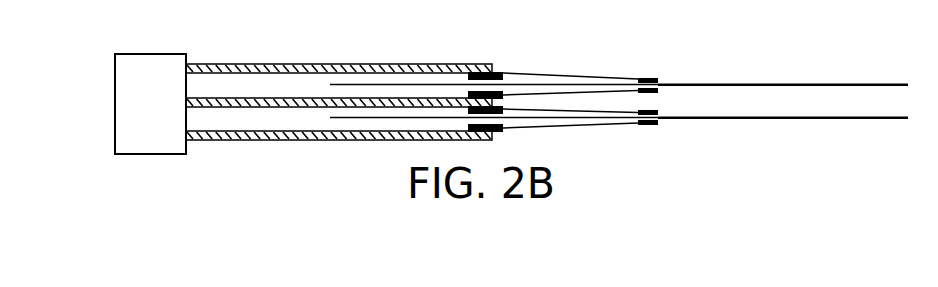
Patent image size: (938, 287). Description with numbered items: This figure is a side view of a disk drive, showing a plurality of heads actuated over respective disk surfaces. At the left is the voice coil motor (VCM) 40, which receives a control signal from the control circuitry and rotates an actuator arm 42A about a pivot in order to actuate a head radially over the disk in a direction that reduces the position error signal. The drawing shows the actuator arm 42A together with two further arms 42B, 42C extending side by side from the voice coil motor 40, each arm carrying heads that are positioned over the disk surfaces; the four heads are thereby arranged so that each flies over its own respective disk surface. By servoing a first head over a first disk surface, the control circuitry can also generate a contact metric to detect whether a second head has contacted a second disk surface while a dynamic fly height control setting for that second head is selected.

The voice coil motor (VCM) 40 is at (110, 101).
The actuator arm 42A is at (242, 64).
The second tube 42B is at (278, 100).
The third tube 42C is at (315, 132).